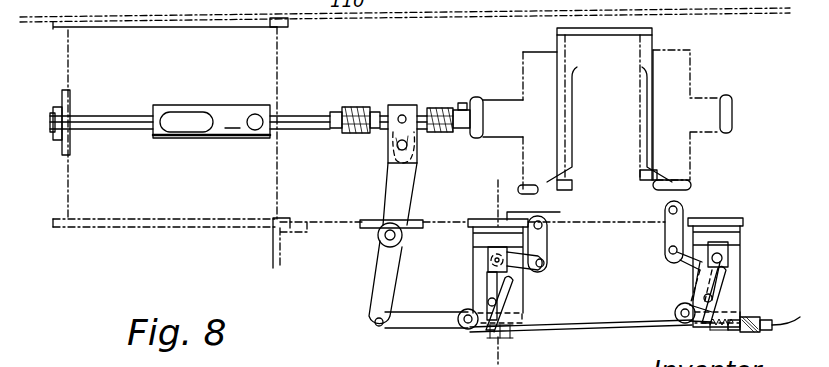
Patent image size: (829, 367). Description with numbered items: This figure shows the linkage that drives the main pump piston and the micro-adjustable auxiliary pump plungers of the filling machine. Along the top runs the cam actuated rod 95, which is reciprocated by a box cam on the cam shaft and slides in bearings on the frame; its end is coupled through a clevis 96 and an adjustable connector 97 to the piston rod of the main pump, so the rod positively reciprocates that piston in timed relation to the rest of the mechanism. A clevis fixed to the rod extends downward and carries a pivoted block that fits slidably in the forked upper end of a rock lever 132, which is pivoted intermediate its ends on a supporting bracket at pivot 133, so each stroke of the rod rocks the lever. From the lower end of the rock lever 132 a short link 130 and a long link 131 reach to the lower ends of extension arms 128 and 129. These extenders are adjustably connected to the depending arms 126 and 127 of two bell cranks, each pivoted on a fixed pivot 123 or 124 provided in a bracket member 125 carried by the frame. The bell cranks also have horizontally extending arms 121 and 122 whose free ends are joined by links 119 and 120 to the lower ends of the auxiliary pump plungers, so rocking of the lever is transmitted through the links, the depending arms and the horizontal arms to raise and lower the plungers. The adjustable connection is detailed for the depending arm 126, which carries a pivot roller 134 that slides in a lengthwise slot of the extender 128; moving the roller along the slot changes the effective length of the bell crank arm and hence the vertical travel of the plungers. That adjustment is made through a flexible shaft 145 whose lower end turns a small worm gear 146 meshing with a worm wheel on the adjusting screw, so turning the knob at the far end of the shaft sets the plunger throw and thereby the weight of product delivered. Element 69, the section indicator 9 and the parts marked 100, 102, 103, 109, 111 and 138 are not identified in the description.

The section line 9 is at (504, 190).
The cylinder housing 69 is at (620, 83).
The cam actuated rod 95 is at (305, 116).
The clevis 96 is at (442, 107).
The adjustable connector 97 is at (348, 106).
The arm 100 is at (392, 157).
The bracket 102 is at (399, 106).
The clamp 103 is at (387, 143).
The rod end 109 is at (462, 103).
The bracket 111 is at (648, 192).
The link 119 is at (546, 241).
The link 120 is at (665, 232).
The horizontally extending arm 121 is at (515, 265).
The horizontally extending arm 122 is at (693, 262).
The pivot 123 is at (487, 260).
The pivot 124 is at (715, 258).
The bracket member 125 is at (473, 241).
The depending arm 126 is at (503, 294).
The depending arm 127 is at (707, 280).
The extension arm 128 is at (485, 307).
The extension arm 129 is at (722, 279).
The short link 130 is at (430, 313).
The long link 131 is at (627, 313).
The rock lever 132 is at (377, 279).
The pivot 133 is at (380, 240).
The pivot roller 134 is at (489, 300).
The block 138 is at (517, 300).
The flexible shaft 145 is at (793, 315).
The worm gear 146 is at (720, 329).